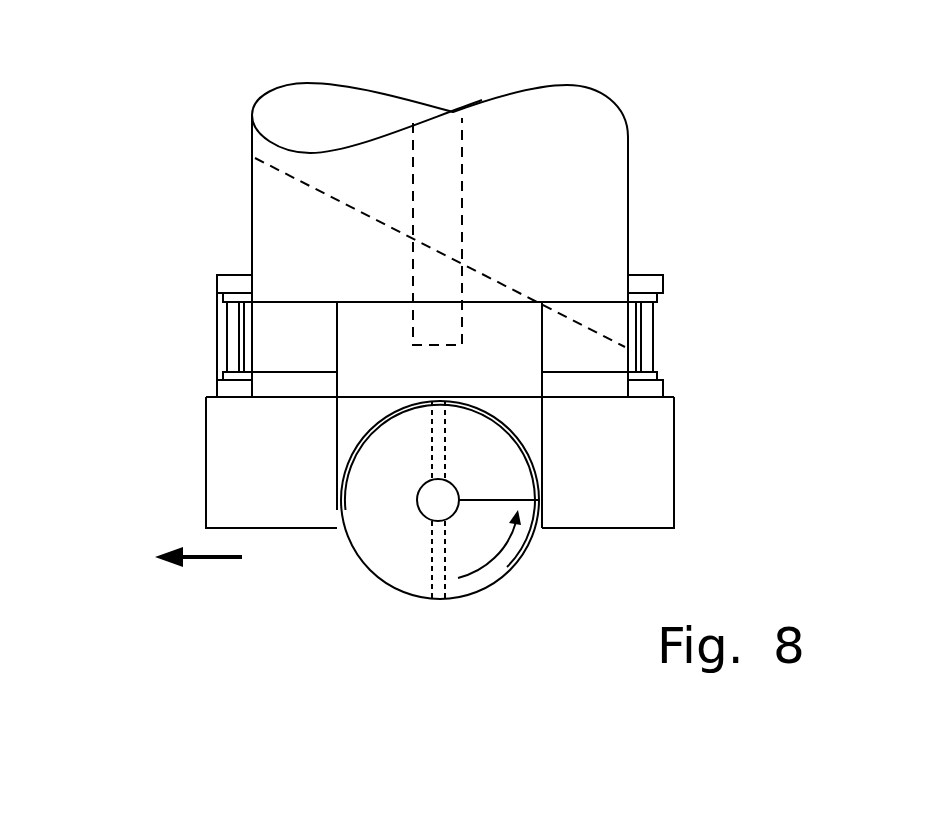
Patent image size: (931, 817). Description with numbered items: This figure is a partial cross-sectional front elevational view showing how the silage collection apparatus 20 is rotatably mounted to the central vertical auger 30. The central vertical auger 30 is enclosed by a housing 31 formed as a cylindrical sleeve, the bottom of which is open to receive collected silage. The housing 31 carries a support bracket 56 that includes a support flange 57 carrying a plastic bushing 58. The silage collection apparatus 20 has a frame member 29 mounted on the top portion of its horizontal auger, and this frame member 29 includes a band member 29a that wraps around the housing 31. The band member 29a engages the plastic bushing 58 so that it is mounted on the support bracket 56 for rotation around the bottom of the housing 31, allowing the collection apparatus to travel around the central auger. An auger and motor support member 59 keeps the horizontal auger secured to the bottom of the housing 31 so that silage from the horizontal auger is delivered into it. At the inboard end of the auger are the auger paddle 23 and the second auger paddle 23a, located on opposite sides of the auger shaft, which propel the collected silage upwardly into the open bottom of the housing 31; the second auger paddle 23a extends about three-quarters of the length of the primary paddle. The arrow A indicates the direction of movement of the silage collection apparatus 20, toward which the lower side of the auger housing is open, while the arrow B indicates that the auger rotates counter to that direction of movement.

The silage collection apparatus 20 is at (355, 560).
The auger paddle 23 is at (445, 467).
The second auger paddle 23a is at (430, 567).
The frame member 29 is at (385, 318).
The band member 29a is at (228, 338).
The central vertical auger 30 is at (383, 76).
The housing 31 is at (578, 177).
The support bracket 56 is at (195, 228).
The support flange 57 is at (217, 282).
The plastic bushing 58 is at (225, 300).
The auger and motor support member 59 is at (220, 452).
The arrow indicating direction of movement A is at (198, 562).
The arrow indicating direction of rotation B is at (468, 577).